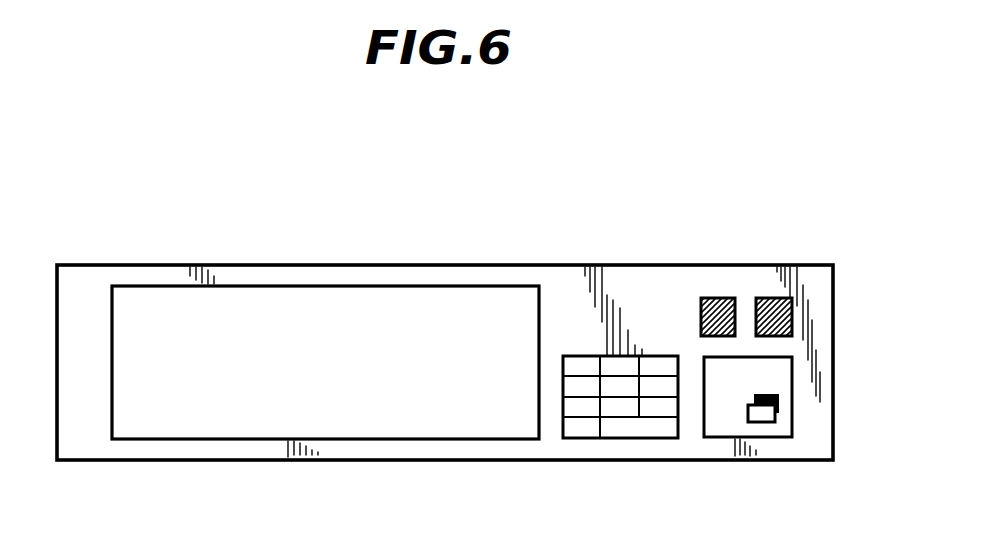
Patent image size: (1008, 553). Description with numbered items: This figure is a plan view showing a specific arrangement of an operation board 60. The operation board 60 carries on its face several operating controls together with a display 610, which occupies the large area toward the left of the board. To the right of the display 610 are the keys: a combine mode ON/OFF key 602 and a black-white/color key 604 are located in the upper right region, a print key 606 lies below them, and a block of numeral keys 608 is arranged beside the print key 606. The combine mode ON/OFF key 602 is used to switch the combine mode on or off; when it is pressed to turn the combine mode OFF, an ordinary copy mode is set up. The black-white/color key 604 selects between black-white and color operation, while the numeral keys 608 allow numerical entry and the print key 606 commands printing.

The operation board 60 is at (788, 232).
The combine mode ON/OFF key 602 is at (719, 298).
The black-white/color key 604 is at (792, 308).
The print key 606 is at (792, 412).
The numeral keys 608 is at (660, 438).
The display 610 is at (329, 287).